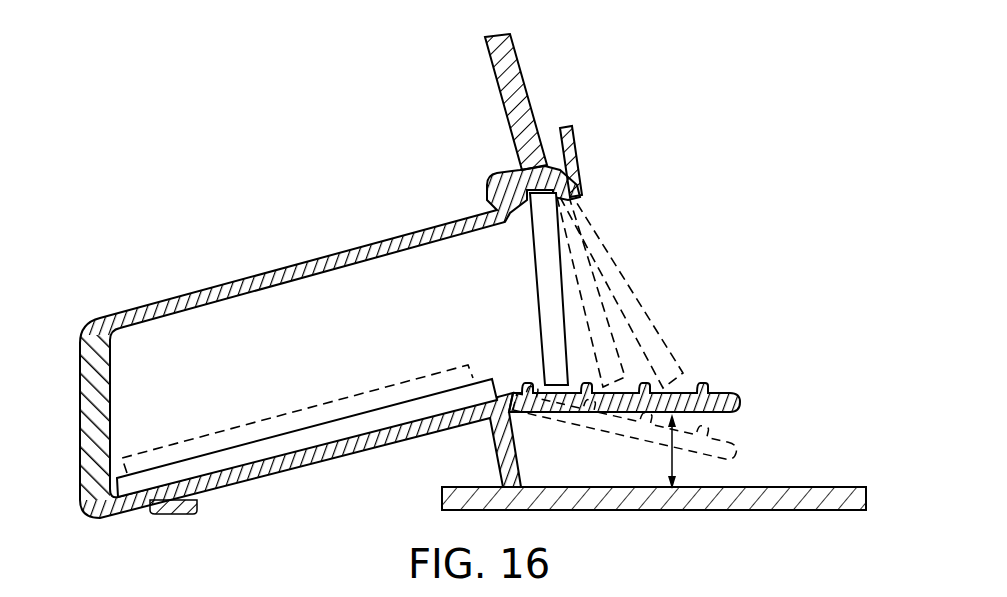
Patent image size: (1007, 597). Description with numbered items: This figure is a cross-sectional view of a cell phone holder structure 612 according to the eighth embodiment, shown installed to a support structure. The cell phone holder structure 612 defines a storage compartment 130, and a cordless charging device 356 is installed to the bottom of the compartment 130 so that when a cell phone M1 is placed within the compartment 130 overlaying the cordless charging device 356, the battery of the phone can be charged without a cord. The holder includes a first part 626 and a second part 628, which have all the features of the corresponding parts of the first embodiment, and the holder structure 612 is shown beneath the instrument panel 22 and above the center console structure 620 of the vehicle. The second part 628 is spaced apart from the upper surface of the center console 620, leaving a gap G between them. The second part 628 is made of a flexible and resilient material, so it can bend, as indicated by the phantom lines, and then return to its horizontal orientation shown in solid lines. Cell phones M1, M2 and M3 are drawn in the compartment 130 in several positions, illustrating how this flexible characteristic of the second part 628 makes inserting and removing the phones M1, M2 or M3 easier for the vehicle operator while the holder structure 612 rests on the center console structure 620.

The instrument panel 22 is at (505, 70).
The first part 626 is at (580, 156).
The cell phone holder structure 612 is at (770, 174).
The storage compartment 130 is at (233, 274).
The second part 628 is at (728, 392).
The center console structure 620 is at (800, 487).
The cordless charging device 356 is at (330, 432).
The cell phone M1 is at (548, 308).
The cell phone M2 is at (608, 335).
The cell phone M3 is at (610, 288).
The gap G is at (670, 458).